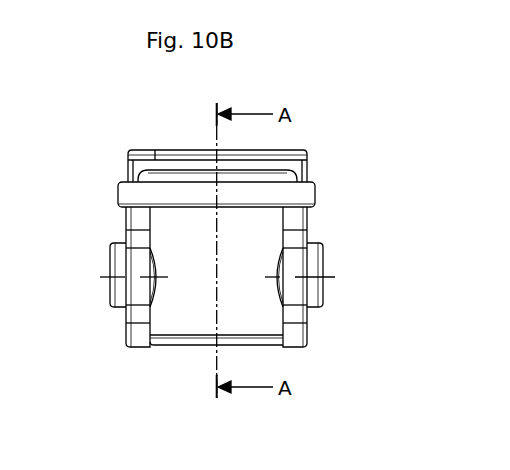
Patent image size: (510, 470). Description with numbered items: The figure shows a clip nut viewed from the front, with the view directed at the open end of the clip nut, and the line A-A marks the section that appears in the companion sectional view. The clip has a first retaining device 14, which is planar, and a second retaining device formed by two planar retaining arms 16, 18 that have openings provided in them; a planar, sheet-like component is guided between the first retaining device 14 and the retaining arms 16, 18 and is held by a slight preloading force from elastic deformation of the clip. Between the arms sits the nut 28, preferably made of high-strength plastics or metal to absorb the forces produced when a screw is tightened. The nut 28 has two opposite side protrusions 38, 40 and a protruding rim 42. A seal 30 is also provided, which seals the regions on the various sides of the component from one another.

The first retaining device 14 is at (168, 150).
The seal 30 is at (295, 177).
The protruding rim 42 is at (316, 195).
The side protrusion 38 is at (110, 285).
The side protrusion 40 is at (323, 291).
The retaining arm 16 is at (127, 333).
The retaining arm 18 is at (308, 345).
The nut 28 is at (187, 345).